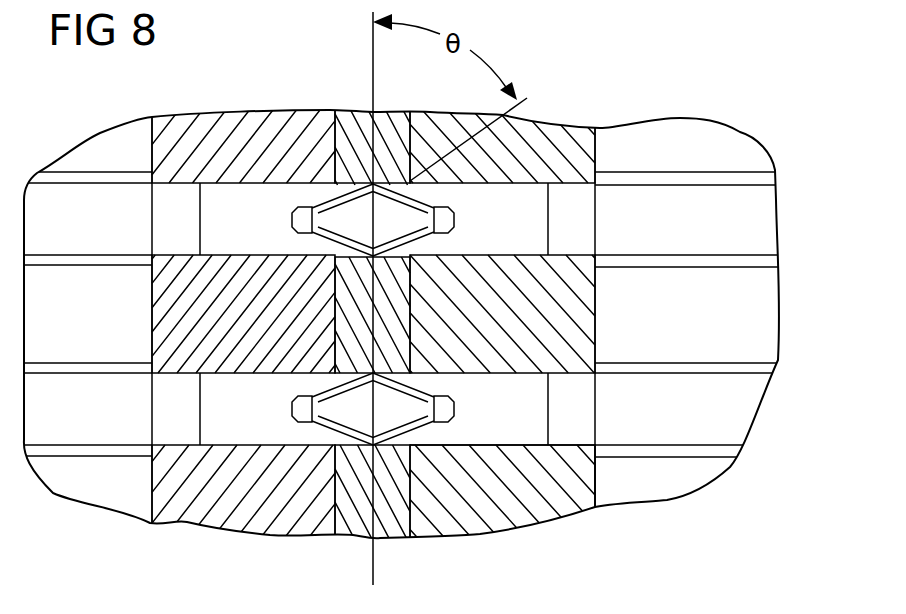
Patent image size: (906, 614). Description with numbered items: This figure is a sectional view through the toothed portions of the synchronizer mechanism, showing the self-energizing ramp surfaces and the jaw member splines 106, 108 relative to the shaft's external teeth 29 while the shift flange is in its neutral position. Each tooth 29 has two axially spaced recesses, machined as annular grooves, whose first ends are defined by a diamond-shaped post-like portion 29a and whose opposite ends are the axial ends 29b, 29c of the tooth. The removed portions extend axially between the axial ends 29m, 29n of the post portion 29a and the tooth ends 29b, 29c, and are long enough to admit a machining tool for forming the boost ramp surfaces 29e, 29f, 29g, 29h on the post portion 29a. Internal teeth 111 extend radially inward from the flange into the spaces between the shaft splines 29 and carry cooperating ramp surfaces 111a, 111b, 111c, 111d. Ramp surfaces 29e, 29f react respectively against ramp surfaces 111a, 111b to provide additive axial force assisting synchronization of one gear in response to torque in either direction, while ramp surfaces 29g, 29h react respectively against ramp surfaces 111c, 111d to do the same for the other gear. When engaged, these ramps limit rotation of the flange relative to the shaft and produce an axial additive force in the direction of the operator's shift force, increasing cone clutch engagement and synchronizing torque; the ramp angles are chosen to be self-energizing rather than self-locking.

The external teeth 29 is at (779, 192).
The post-like portion 29a is at (337, 386).
The axially opposite end 29b is at (150, 202).
The axially opposite end 29c is at (600, 207).
The boost ramp surface 29e is at (430, 236).
The boost ramp surface 29f is at (436, 205).
The boost ramp surface 29g is at (318, 240).
The boost ramp surface 29h is at (323, 204).
The axial end of post portion 29m is at (295, 413).
The axial end of post portion 29n is at (456, 412).
The jaw clutch spline 106 is at (136, 292).
The jaw clutch spline 108 is at (614, 307).
The internal teeth 111 is at (318, 513).
The ramp surface 111a is at (335, 258).
The ramp surface 111b is at (334, 180).
The ramp surface 111c is at (412, 368).
The ramp surface 111d is at (412, 452).